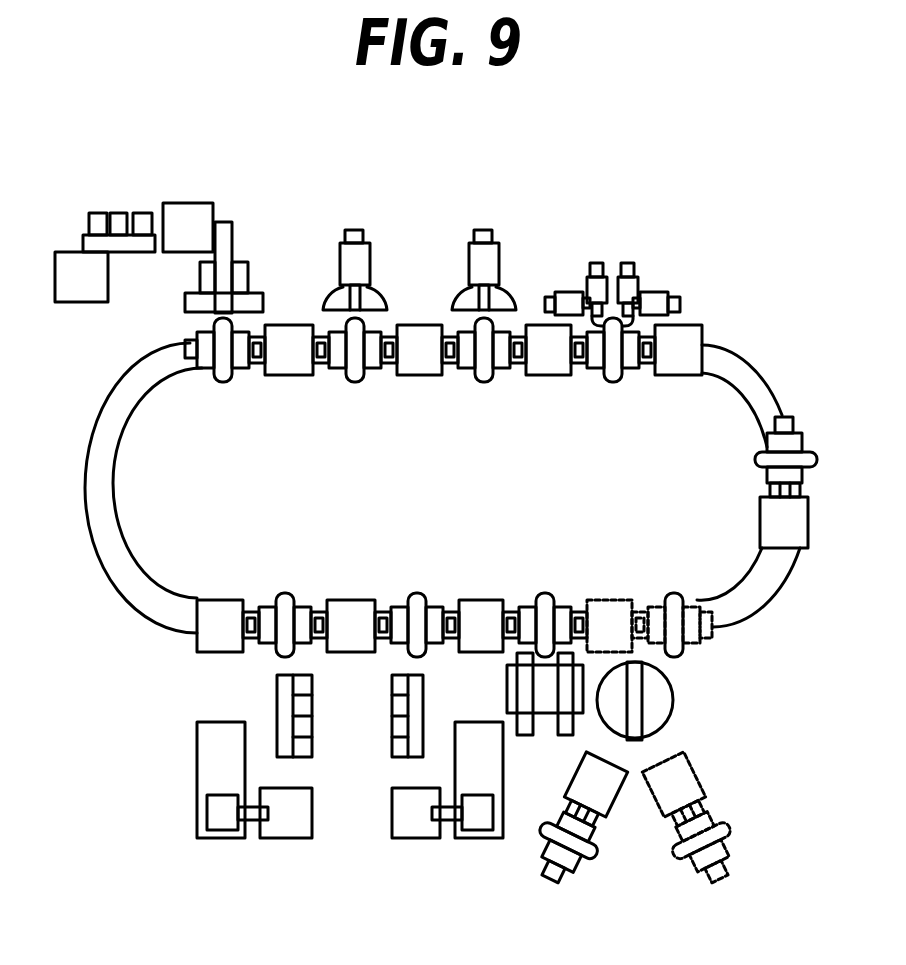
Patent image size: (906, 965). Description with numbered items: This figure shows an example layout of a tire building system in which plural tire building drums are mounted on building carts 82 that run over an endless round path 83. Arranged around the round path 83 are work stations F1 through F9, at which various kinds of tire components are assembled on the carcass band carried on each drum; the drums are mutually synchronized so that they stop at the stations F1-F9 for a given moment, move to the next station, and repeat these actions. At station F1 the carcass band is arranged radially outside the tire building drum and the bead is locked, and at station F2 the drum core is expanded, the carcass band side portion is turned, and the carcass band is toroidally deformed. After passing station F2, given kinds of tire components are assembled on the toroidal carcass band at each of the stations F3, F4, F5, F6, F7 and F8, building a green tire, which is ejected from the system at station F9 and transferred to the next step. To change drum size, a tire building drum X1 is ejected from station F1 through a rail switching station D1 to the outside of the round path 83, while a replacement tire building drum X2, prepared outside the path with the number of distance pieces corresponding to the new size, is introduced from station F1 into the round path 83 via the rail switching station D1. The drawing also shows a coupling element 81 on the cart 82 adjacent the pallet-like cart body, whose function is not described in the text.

The station F1 is at (677, 586).
The station F2 is at (547, 586).
The station F3 is at (416, 586).
The station F4 is at (286, 586).
The station F5 is at (221, 390).
The station F6 is at (351, 390).
The station F7 is at (481, 390).
The station F8 is at (610, 390).
The station F9 is at (745, 461).
The pallet coupling 81 is at (519, 609).
The building cart 82 is at (473, 618).
The endless round path 83 is at (138, 546).
The rail switching station D1 is at (640, 700).
The tire building drum X1 is at (653, 802).
The tire building drum X2 is at (614, 792).